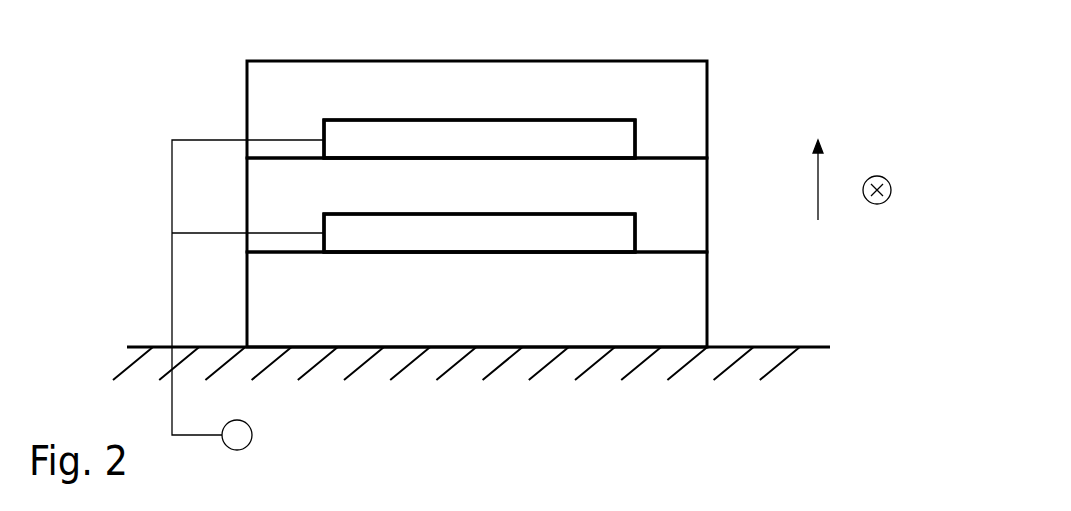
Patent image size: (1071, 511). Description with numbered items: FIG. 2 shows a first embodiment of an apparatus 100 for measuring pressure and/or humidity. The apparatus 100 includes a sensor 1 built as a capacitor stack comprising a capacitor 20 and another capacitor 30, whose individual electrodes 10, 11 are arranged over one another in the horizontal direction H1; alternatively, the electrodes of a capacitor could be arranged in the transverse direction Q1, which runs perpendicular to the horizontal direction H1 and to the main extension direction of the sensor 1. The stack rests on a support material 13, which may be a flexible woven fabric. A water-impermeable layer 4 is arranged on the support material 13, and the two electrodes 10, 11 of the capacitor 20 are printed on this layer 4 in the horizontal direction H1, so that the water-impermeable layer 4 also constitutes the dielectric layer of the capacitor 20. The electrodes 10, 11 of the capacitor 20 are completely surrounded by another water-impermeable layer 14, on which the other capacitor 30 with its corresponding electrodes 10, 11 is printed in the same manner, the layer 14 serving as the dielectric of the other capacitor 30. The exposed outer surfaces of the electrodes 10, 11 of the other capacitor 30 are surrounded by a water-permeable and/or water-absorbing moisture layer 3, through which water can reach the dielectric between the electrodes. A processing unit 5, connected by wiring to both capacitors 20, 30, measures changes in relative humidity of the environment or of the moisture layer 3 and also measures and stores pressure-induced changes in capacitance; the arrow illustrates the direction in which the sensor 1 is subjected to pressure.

The apparatus 100 is at (45, 163).
The sensor 1 is at (605, 227).
The moisture layer 3 is at (695, 98).
The other water-impermeable layer 14 is at (695, 206).
The water-impermeable layer 4 is at (695, 294).
The electrode 10 is at (357, 129).
The electrode 11 is at (394, 227).
The other capacitor 30 is at (523, 130).
The capacitor 20 is at (487, 240).
The support material 13 is at (683, 348).
The processing unit 5 is at (252, 437).
The transverse direction Q1 is at (832, 180).
The horizontal direction H1 is at (891, 190).